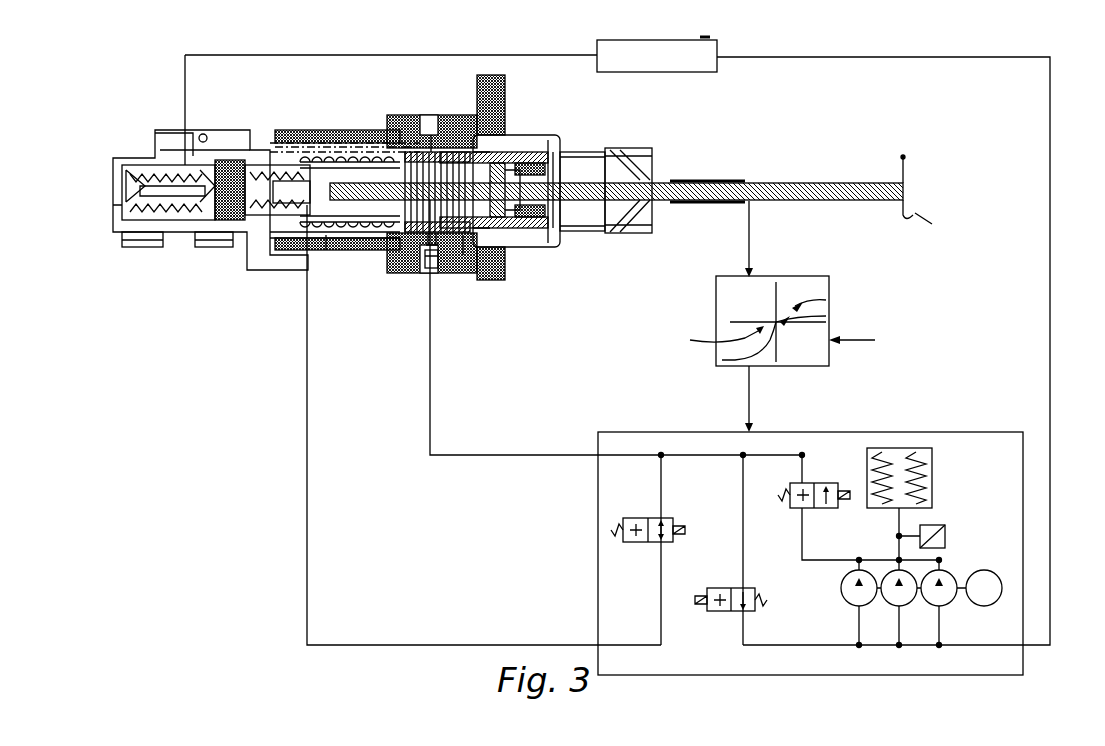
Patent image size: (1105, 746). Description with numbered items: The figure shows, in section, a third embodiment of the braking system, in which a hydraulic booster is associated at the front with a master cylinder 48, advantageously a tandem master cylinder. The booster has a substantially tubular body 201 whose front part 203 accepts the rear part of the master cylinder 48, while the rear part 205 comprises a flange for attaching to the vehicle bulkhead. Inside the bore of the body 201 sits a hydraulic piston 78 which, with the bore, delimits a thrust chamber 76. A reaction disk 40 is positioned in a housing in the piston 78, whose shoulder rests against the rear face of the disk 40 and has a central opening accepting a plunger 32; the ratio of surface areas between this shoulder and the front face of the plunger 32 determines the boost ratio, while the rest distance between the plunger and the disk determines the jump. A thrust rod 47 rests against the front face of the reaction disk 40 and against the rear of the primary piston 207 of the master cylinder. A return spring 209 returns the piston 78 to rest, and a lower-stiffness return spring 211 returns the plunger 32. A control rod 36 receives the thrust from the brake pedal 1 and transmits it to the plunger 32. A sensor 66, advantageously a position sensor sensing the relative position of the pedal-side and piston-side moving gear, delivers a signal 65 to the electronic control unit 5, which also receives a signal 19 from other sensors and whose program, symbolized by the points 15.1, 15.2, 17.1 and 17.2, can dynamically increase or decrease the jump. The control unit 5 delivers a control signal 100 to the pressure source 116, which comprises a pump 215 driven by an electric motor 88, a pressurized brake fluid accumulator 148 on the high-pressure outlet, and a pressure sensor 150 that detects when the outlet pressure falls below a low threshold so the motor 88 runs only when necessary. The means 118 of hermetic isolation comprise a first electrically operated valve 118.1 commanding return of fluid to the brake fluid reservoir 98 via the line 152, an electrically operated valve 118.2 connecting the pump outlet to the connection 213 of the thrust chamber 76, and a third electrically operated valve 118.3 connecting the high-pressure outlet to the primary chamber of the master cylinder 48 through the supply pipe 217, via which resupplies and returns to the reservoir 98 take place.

The brake pedal 1 is at (922, 195).
The electronic control unit 5 is at (816, 368).
The point 15.1 is at (722, 360).
The point 15.2 is at (708, 339).
The point 17.1 is at (826, 316).
The point 17.2 is at (826, 300).
The signal 19 is at (860, 340).
The plunger 32 is at (582, 160).
The control rod 36 is at (870, 201).
The reaction disk 40 is at (517, 247).
The thrust rod 47 is at (328, 248).
The master cylinder 48 is at (207, 285).
The signal 65 is at (752, 236).
The sensor 66 is at (742, 180).
The thrust chamber 76 is at (432, 270).
The hydraulic piston 78 is at (533, 235).
The electric motor 88 is at (984, 608).
The brake fluid reservoir 98 is at (620, 40).
The control signal 100 is at (747, 398).
The pressure source 116 is at (598, 600).
The means of hermetic isolation 118 is at (762, 650).
The first electrically operated valve 118.1 is at (752, 611).
The electrically operated valve 118.2 is at (818, 508).
The third electrically operated valve 118.3 is at (668, 518).
The pressurized brake fluid accumulator 148 is at (932, 470).
The pressure sensor 150 is at (945, 536).
The line 152 is at (965, 58).
The tubular body 201 is at (318, 130).
The front part 203 is at (283, 130).
The rear part 205 is at (507, 88).
The primary piston 207 is at (345, 140).
The return spring 209 is at (402, 148).
The return spring 211 is at (520, 168).
The connection 213 is at (428, 275).
The pump 215 is at (955, 574).
The supply pipe 217 is at (309, 379).